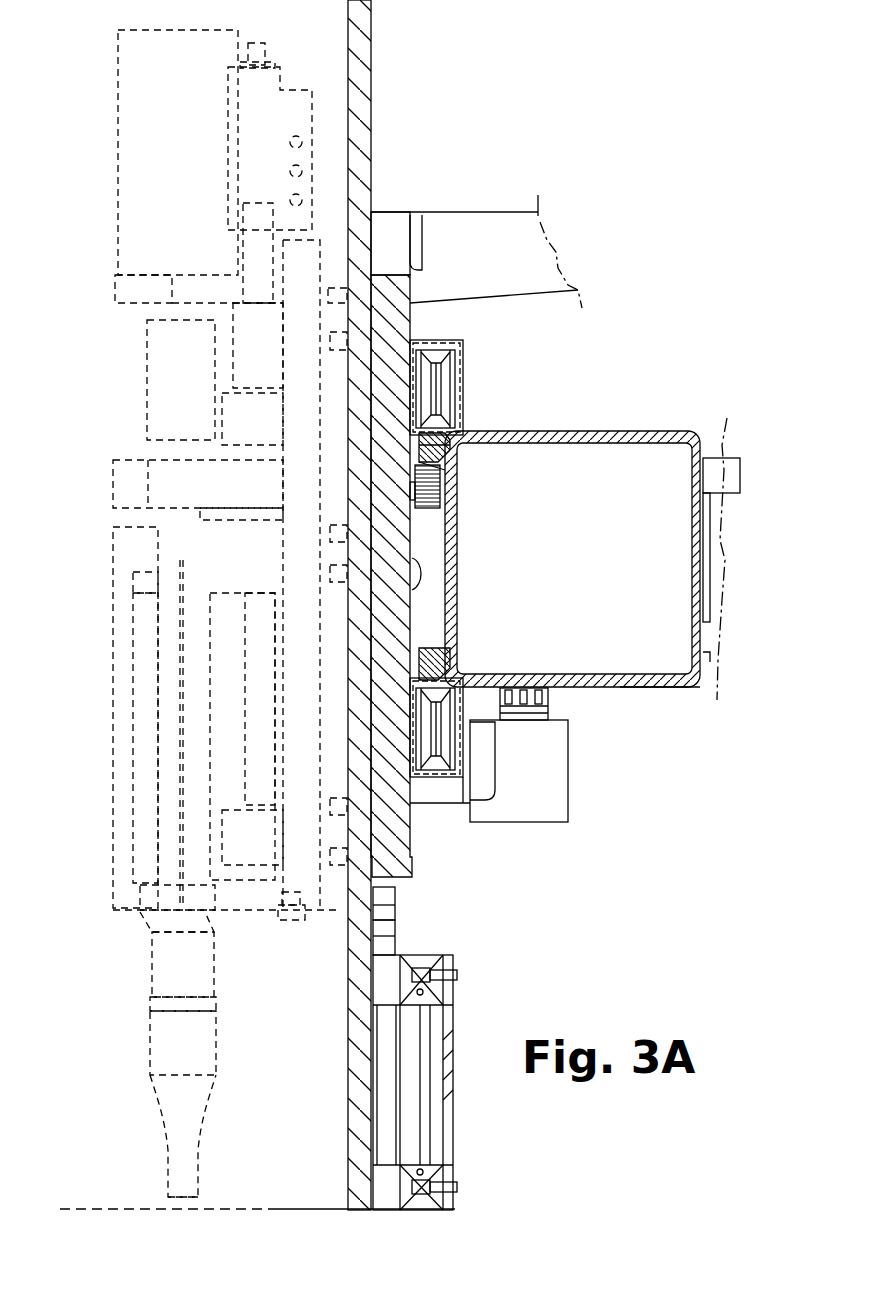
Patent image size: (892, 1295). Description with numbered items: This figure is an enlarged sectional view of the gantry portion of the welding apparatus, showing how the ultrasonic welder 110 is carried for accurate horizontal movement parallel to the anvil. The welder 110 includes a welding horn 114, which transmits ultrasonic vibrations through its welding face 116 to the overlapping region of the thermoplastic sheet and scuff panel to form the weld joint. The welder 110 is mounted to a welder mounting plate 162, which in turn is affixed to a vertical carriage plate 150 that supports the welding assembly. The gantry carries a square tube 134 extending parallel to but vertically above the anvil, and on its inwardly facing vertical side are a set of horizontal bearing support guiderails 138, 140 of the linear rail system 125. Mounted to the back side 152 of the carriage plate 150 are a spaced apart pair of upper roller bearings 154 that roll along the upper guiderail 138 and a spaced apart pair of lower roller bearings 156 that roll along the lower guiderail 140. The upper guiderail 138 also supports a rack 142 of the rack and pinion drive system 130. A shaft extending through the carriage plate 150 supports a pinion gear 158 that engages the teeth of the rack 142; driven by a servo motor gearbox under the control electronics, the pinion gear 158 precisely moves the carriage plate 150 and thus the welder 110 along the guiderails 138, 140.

The ultrasonic welder 110 is at (112, 828).
The welding horn 114 is at (170, 1155).
The welding face 116 is at (182, 1200).
The linear rail system 125 is at (477, 634).
The rack and pinion drive system 130 is at (466, 495).
The square tube 134 is at (655, 678).
The upper guiderail 138 is at (448, 445).
The lower guiderail 140 is at (438, 662).
The rack 142 is at (447, 454).
The carriage plate 150 is at (385, 330).
The back side 152 is at (412, 558).
The upper roller bearings 154 is at (437, 397).
The lower roller bearings 156 is at (435, 728).
The pinion gear 158 is at (430, 504).
The welder mounting plate 162 is at (362, 152).